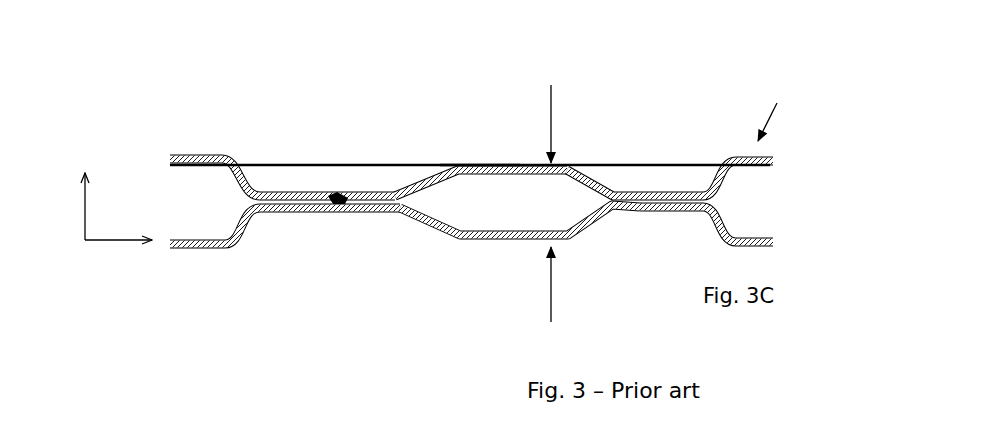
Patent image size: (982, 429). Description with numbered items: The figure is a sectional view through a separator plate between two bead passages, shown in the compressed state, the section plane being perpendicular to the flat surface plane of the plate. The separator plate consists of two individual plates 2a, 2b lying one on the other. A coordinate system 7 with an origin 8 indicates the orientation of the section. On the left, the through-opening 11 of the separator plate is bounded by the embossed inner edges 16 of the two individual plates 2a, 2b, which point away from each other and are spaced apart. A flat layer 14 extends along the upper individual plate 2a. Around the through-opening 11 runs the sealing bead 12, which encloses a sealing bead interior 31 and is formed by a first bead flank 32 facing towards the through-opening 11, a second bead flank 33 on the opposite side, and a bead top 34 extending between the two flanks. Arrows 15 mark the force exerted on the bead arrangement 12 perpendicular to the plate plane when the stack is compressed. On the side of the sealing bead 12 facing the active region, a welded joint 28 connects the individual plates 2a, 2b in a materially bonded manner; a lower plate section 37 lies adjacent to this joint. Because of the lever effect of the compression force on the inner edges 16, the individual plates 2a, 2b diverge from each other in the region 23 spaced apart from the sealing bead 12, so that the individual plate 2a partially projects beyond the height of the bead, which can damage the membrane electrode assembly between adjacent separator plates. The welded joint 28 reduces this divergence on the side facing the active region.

The individual plate 2a is at (775, 160).
The individual plate 2b is at (775, 243).
The coordinate system 7 is at (84, 198).
The origin 8 is at (100, 242).
The through-opening 11 is at (151, 210).
The sealing bead 12 is at (507, 167).
The flat layer 14 is at (298, 163).
The arrows 15 is at (553, 115).
The embossed inner edge 16 is at (168, 157).
The region 23 is at (774, 112).
The welded joint 28 is at (339, 201).
The sealing bead interior 31 is at (526, 220).
The first bead flank 32 is at (437, 174).
The second bead flank 33 is at (583, 177).
The bead top 34 is at (475, 164).
The lower layer section 37 is at (290, 212).